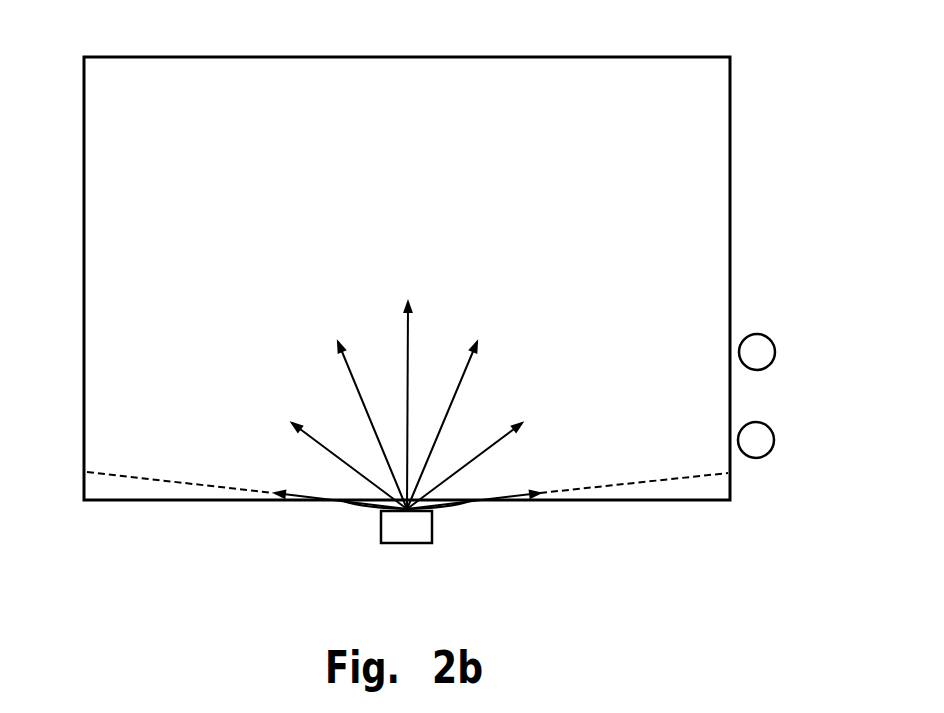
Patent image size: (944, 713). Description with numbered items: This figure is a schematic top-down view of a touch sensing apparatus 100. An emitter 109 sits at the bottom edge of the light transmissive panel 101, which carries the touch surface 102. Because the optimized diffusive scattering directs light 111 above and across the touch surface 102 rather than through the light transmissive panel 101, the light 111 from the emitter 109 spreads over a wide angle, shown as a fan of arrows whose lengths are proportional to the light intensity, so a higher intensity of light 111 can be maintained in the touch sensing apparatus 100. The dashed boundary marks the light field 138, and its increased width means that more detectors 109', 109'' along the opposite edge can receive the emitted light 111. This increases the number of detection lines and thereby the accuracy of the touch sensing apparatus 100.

The touch sensing apparatus 100 is at (449, 313).
The light transmissive panel 101 is at (473, 255).
The touch surface 102 is at (687, 77).
The emitter 109 is at (357, 564).
The detector 109' is at (801, 386).
The detector 109'' is at (804, 476).
The light 111 is at (467, 365).
The light field 138 is at (612, 483).